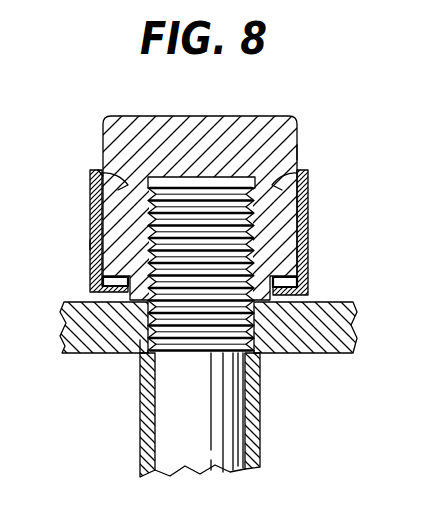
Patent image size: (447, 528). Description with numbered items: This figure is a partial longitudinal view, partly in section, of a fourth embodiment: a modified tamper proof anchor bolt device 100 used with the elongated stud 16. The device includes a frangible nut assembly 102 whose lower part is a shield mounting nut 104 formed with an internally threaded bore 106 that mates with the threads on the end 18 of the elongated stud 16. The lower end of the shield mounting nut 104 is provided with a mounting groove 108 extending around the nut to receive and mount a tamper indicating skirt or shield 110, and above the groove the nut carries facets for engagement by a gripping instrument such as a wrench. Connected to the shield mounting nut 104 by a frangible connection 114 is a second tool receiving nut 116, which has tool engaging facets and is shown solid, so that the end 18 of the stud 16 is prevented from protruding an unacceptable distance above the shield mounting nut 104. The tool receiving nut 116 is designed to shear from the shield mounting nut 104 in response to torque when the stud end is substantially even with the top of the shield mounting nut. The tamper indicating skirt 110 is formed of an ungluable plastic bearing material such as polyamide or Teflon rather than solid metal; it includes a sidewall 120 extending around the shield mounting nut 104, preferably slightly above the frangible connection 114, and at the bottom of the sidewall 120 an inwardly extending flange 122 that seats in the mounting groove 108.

The tamper proof anchor bolt device 100 is at (341, 248).
The frangible nut assembly 102 is at (283, 112).
The shield mounting nut 104 is at (90, 205).
The internally threaded bore 106 is at (298, 207).
The mounting groove 108 is at (297, 353).
The tamper indicating skirt 110 is at (90, 245).
The frangible connection 114 is at (100, 172).
The tool receiving nut 116 is at (297, 152).
The sidewall 120 is at (90, 175).
The inwardly extending flange 122 is at (306, 291).
The elongated stud 16 is at (240, 428).
The end of the elongated stud 18 is at (138, 330).